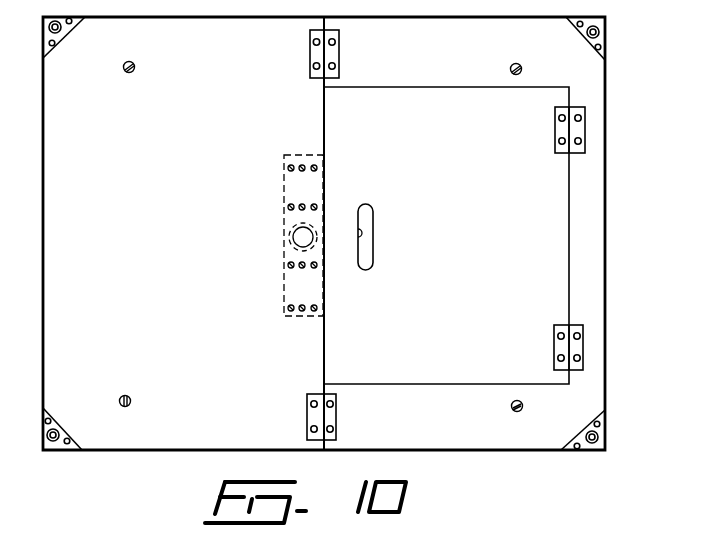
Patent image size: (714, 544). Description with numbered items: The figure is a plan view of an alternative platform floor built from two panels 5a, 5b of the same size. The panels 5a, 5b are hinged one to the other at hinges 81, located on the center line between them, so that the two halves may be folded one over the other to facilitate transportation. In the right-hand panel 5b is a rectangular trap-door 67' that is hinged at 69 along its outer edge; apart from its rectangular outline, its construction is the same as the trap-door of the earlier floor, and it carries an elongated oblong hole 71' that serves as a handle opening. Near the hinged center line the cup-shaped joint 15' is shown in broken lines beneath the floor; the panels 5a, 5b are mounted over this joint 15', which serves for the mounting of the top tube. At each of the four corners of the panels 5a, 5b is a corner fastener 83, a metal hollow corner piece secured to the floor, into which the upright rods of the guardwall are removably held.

The panel 5a is at (152, 247).
The panel 5b is at (408, 431).
The trap-door 67' is at (446, 235).
The elongated oblong hole 71' is at (401, 237).
The joint 15' is at (271, 235).
The hinge 81 is at (341, 54).
The hinge 69 is at (586, 130).
The corner fastener 83 is at (57, 42).